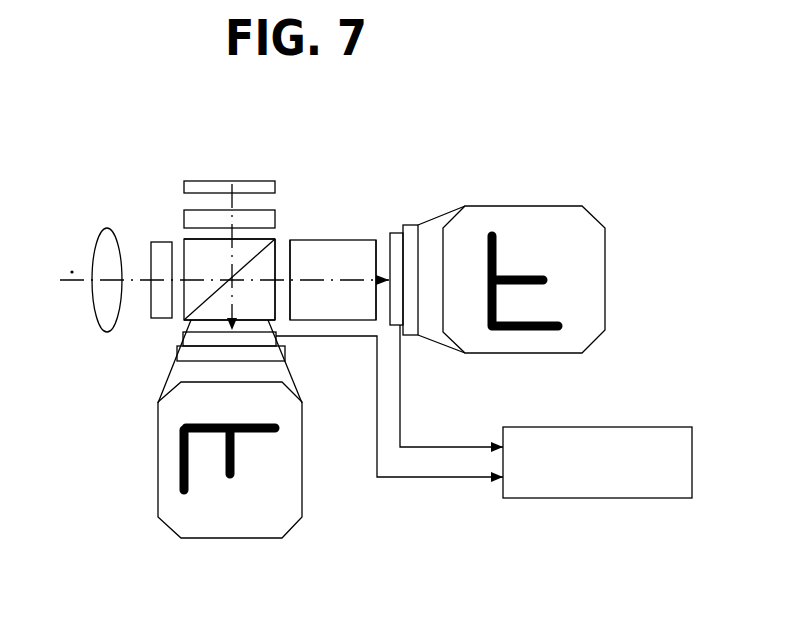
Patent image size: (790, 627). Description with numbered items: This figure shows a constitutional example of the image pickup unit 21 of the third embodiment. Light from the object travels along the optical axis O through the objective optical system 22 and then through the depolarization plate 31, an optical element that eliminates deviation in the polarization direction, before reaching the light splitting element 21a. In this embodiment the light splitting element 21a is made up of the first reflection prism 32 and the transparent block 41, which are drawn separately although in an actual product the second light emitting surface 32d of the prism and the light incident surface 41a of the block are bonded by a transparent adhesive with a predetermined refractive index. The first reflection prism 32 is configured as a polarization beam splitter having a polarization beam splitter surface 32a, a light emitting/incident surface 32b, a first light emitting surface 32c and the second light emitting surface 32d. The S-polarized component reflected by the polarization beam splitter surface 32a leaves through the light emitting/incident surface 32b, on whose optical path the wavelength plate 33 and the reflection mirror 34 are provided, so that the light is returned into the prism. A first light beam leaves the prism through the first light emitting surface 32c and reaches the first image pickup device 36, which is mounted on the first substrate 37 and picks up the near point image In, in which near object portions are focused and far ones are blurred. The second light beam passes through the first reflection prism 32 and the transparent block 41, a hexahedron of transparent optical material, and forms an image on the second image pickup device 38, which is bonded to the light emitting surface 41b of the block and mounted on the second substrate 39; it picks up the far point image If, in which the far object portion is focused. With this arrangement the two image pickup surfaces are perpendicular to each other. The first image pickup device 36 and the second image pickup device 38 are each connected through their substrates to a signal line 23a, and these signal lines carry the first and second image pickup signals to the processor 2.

The processor 2 is at (598, 427).
The image pickup unit 21 is at (152, 176).
The light splitting element 21a is at (287, 267).
The objective optical system 22 is at (104, 230).
The depolarization plate 31 is at (162, 244).
The first reflection prism 32 is at (186, 292).
The polarization beam splitter surface 32a is at (200, 304).
The light emitting/incident surface 32b is at (213, 238).
The first light emitting surface 32c is at (183, 322).
The second light emitting surface 32d is at (279, 339).
The wavelength plate 33 is at (185, 220).
The reflection mirror 34 is at (240, 184).
The first image pickup device 36 is at (278, 344).
The first substrate 37 is at (284, 356).
The second image pickup device 38 is at (393, 233).
The second substrate 39 is at (410, 225).
The transparent block 41 is at (318, 255).
The light incident surface 41a is at (289, 260).
The light emitting surface 41b is at (378, 262).
The signal line 23a is at (455, 447).
The optical axis O is at (70, 270).
The far point image If is at (605, 280).
The near point image In is at (302, 500).